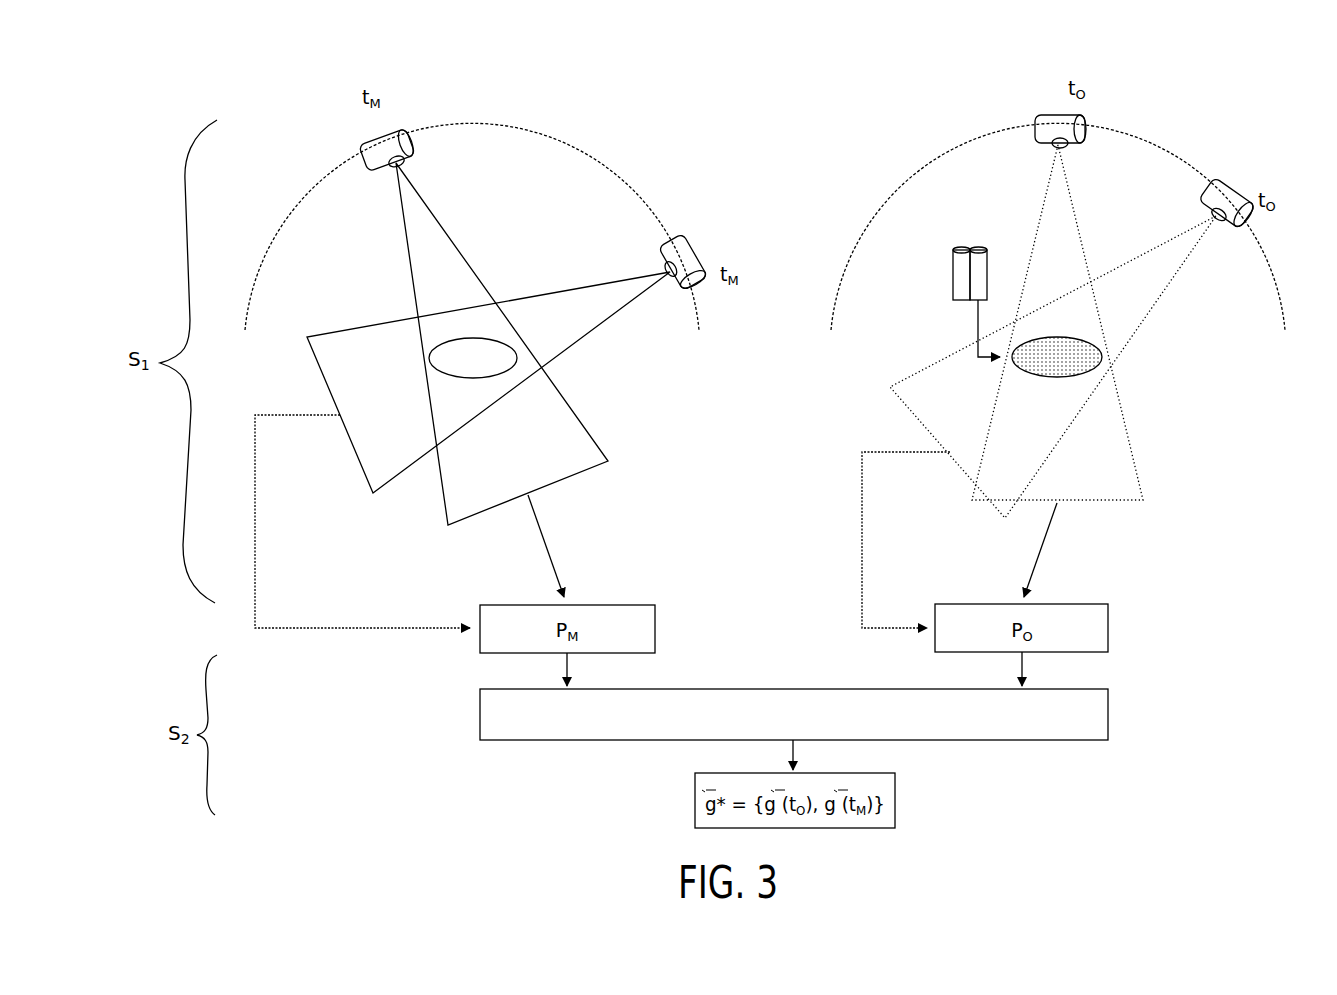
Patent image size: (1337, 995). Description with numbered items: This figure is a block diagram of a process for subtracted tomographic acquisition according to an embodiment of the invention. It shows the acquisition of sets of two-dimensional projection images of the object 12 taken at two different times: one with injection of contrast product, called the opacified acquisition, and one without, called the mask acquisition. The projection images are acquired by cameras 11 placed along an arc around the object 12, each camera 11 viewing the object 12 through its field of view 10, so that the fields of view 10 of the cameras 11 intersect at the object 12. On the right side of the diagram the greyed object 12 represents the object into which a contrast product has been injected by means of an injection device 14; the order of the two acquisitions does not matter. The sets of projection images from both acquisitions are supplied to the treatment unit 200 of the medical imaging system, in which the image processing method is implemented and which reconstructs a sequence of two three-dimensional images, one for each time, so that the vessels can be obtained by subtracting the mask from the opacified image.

The field of view of camera 10 is at (447, 227).
The camera 11 is at (393, 136).
The object 12 is at (445, 357).
The injection device 14 is at (975, 232).
The treatment unit 200 is at (1108, 713).